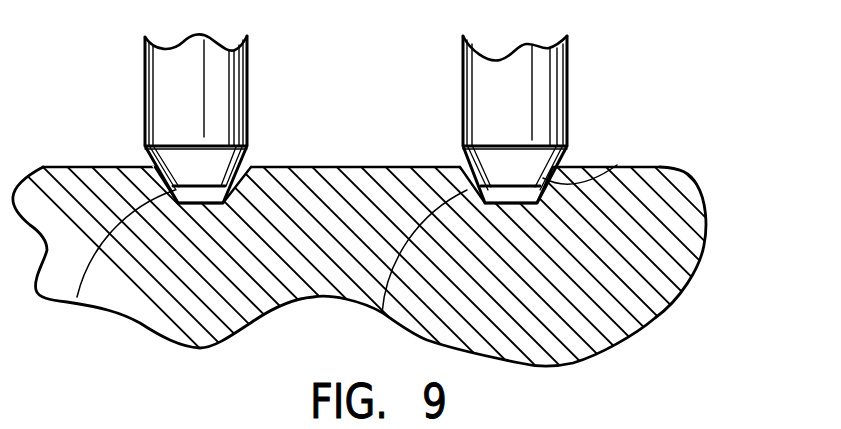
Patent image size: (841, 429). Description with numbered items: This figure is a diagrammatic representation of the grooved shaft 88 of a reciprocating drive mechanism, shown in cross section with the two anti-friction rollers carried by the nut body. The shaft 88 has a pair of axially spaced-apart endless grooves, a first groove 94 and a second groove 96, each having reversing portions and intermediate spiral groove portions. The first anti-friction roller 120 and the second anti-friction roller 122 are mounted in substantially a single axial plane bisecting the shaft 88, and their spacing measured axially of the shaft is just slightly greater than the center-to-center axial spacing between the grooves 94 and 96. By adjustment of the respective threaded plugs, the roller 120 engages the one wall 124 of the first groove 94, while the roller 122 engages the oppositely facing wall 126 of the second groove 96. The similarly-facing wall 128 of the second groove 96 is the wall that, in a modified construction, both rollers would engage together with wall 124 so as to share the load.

The grooved shaft 88 is at (683, 192).
The first endless groove 94 is at (274, 145).
The second endless groove 96 is at (446, 143).
The first anti-friction roller 120 is at (232, 74).
The second anti-friction roller 122 is at (548, 72).
The one wall of the first groove 124 is at (77, 297).
The oppositely facing wall of the second groove 126 is at (617, 165).
The similarly-facing wall of the second groove 128 is at (382, 313).